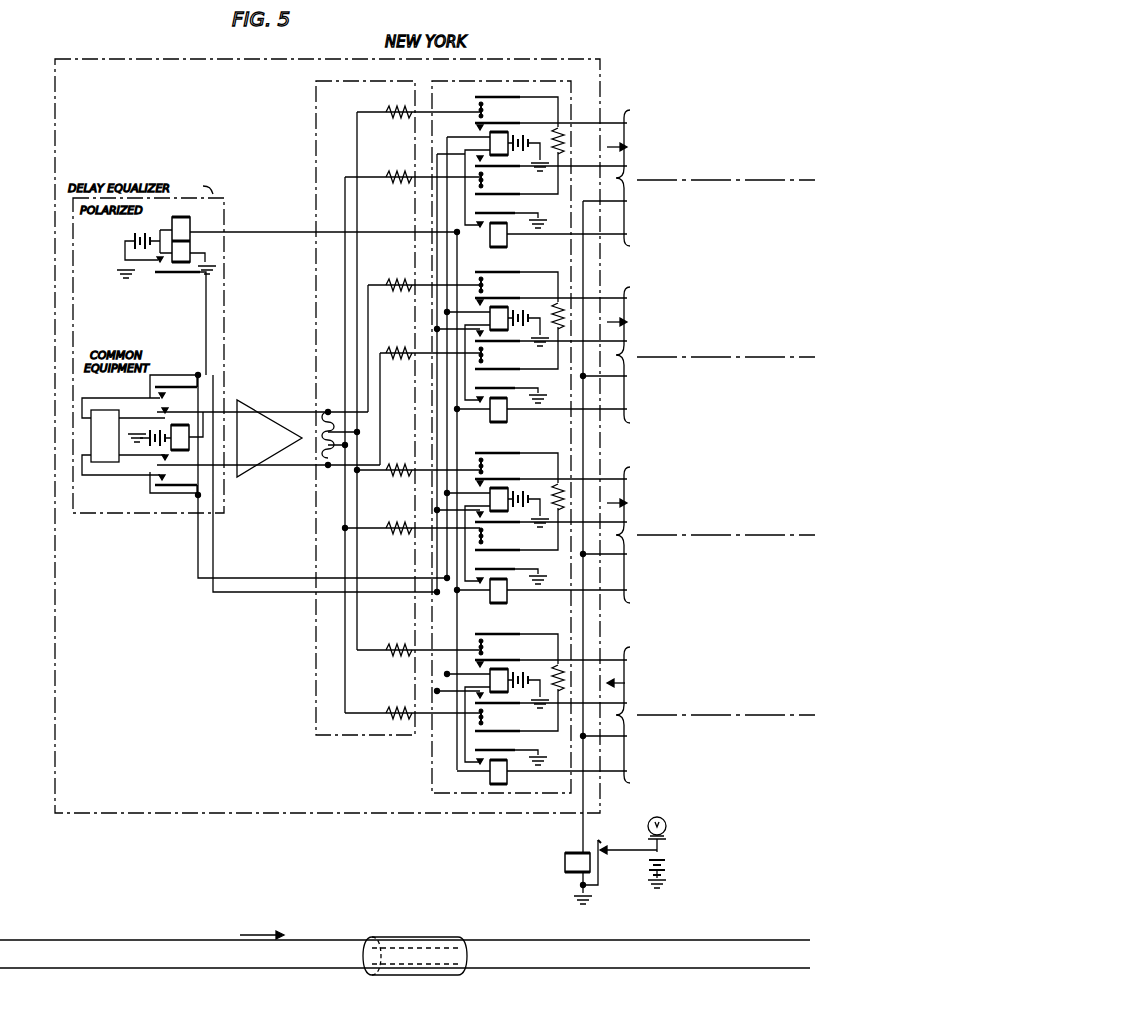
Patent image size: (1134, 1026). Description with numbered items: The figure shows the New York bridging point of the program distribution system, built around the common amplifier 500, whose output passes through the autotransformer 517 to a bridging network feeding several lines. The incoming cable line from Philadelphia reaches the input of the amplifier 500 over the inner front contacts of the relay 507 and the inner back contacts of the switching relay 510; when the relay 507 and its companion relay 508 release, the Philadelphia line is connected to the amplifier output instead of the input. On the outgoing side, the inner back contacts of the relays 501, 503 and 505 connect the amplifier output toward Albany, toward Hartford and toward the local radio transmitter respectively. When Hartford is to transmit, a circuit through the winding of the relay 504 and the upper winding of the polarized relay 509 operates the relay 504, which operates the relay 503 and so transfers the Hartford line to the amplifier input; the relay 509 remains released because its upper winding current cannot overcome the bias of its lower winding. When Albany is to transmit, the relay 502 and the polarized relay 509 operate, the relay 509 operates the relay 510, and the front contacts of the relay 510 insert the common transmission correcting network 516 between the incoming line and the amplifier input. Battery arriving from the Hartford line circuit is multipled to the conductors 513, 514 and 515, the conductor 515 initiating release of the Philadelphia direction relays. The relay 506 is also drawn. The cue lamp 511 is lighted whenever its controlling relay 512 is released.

The common amplifier 500 is at (238, 416).
The relay 501 is at (486, 133).
The relay 502 is at (505, 237).
The relay 503 is at (498, 306).
The relay 504 is at (505, 413).
The relay 505 is at (498, 487).
The relay 506 is at (505, 594).
The relay 507 is at (498, 668).
The relay 508 is at (505, 775).
The polarized relay 509 is at (160, 221).
The switching relay 510 is at (179, 425).
The cue lamp 511 is at (667, 827).
The controlling relay 512 is at (565, 860).
The conductor 513 is at (622, 204).
The conductor 514 is at (622, 562).
The conductor 515 is at (622, 744).
The common transmission correcting network 516 is at (108, 420).
The autotransformer 517 is at (326, 418).